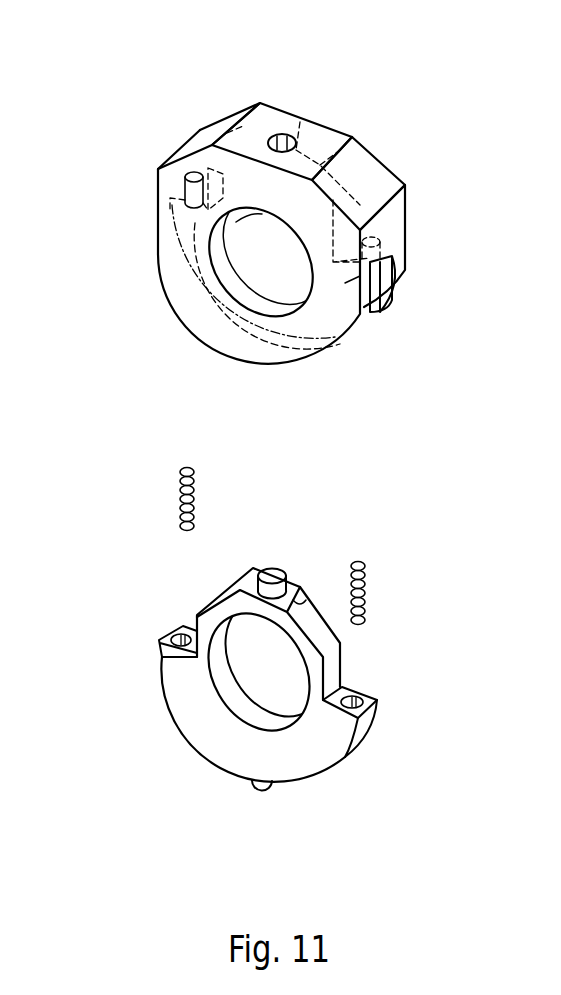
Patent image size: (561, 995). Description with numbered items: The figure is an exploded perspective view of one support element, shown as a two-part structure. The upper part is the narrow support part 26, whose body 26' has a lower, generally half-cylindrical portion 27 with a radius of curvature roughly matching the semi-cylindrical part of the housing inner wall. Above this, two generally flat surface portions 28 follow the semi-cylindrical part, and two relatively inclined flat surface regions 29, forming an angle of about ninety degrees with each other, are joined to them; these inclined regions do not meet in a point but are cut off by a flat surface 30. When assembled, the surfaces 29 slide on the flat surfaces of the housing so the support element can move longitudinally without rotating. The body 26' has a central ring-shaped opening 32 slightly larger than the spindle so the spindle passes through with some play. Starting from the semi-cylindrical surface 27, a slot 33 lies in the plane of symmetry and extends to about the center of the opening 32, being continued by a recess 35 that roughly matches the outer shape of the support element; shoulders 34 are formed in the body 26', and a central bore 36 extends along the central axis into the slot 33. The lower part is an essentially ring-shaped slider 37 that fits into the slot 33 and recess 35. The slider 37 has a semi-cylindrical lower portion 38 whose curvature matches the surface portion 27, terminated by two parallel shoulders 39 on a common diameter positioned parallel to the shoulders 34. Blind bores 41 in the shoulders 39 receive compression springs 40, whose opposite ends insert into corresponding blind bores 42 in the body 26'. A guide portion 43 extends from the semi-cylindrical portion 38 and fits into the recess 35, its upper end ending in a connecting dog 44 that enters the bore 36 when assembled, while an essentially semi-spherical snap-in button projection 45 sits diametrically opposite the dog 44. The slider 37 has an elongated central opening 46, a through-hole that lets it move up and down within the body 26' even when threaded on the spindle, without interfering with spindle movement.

The support part 26 is at (278, 428).
The body 26' is at (304, 183).
The lower, generally half-cylindrical portion 27 is at (193, 312).
The flat surface portions 28 is at (408, 212).
The inclined flat surface regions 29 is at (212, 128).
The flat surface 30 is at (313, 130).
The central ring-shaped opening 32 is at (242, 253).
The slot 33 is at (405, 277).
The shoulders 34 is at (242, 224).
The recess 35 is at (281, 135).
The central bore 36 is at (289, 132).
The slider 37 is at (208, 718).
The semi-cylindrical lower portion 38 is at (333, 778).
The shoulders 39 is at (170, 633).
The compression springs 40 is at (195, 497).
The blind bores 41 is at (183, 636).
The blind bores 42 is at (190, 170).
The guide portion 43 is at (300, 606).
The connecting dog 44 is at (268, 570).
The snap-in button projection 45 is at (263, 788).
The central opening 46 is at (258, 668).